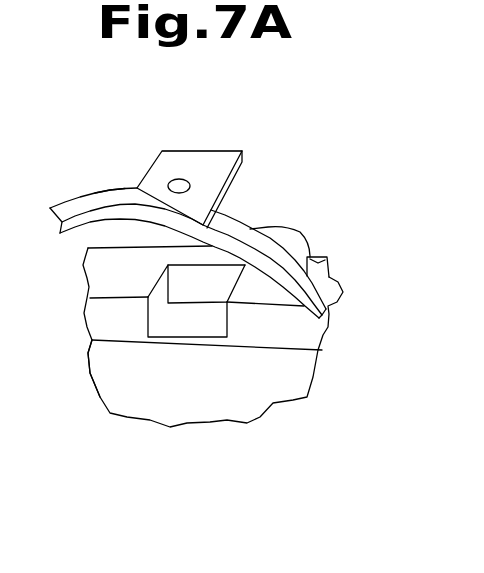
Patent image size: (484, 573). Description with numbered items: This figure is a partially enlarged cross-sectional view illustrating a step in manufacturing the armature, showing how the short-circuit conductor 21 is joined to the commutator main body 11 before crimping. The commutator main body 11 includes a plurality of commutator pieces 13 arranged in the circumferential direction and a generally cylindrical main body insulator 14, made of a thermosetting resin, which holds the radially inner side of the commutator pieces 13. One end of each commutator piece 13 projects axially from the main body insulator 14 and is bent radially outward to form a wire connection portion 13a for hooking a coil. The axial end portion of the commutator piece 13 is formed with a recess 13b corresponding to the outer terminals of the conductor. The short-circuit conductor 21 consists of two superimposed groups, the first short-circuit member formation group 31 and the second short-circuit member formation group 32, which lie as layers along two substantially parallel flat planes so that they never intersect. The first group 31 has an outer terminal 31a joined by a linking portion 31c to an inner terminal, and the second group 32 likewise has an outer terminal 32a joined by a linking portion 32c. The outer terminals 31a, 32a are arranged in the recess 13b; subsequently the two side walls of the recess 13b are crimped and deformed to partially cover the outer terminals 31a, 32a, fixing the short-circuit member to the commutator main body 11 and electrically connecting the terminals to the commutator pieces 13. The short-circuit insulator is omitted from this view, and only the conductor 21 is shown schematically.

The commutator main body 11 is at (332, 336).
The commutator piece 13 is at (86, 266).
The wire connection portion 13a is at (311, 220).
The recess 13b is at (177, 327).
The main body insulator 14 is at (87, 363).
The short-circuit conductor 21 is at (173, 150).
The first short-circuit member formation group 31 is at (68, 207).
The outer terminal 31a is at (207, 157).
The linking portion 31c is at (98, 195).
The second short-circuit member formation group 32 is at (323, 263).
The outer terminal 32a is at (243, 163).
The linking portion 32c is at (311, 259).